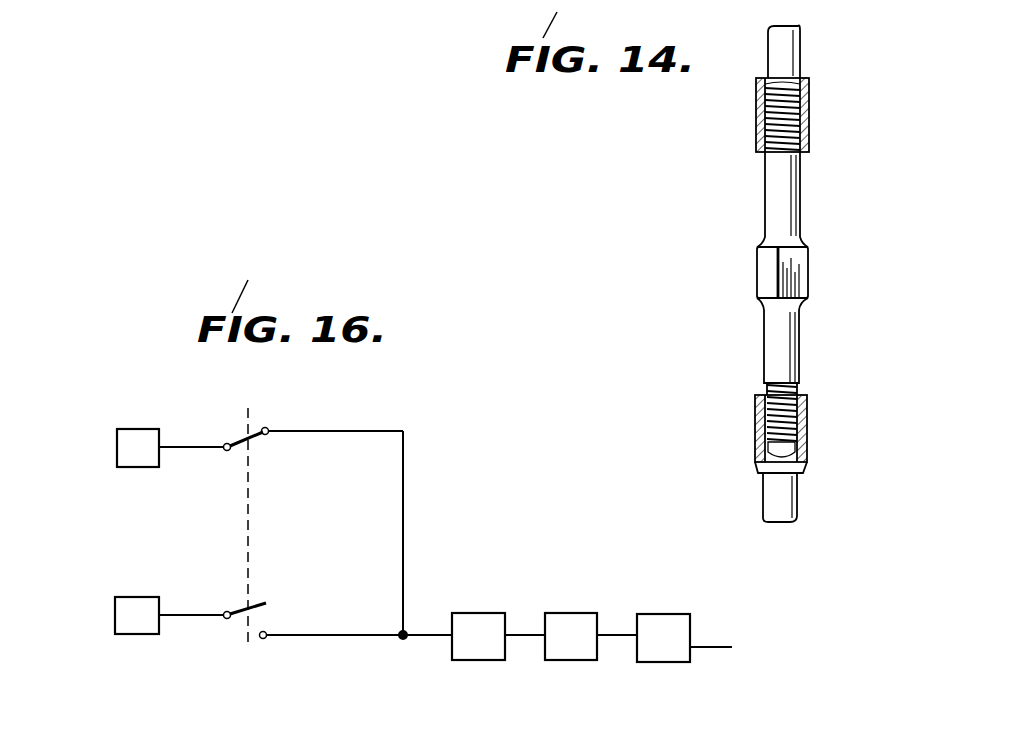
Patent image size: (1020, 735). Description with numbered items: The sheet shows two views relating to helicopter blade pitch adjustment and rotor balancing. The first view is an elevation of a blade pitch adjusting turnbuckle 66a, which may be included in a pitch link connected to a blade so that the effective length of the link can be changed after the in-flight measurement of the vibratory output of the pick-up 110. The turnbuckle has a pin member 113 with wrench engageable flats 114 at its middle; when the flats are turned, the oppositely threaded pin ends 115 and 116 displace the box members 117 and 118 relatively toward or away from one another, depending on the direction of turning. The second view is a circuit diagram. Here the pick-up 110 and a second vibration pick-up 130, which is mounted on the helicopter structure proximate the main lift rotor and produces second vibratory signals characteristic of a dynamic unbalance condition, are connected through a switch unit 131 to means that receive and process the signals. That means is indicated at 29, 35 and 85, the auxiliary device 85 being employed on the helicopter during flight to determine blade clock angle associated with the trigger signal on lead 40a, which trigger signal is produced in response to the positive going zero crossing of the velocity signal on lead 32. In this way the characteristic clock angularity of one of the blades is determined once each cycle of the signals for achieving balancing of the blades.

In FIG. 14, the turnbuckle 66a is at (742, 217).
In FIG. 14, the box member 117 is at (810, 108).
In FIG. 14, the threaded pin end 115 is at (806, 131).
In FIG. 14, the wrench engageable flats 114 is at (805, 284).
In FIG. 14, the pin member 113 is at (750, 323).
In FIG. 14, the threaded pin end 116 is at (801, 413).
In FIG. 14, the box member 118 is at (763, 435).
In FIG. 16, the vibration pick-up 110 is at (133, 429).
In FIG. 16, the second vibration pick-up 130 is at (130, 597).
In FIG. 16, the switch unit 131 is at (224, 639).
In FIG. 16, the signal processing means 29 is at (465, 662).
In FIG. 16, the velocity signal lead 32 is at (525, 636).
In FIG. 16, the signal processing means 35 is at (562, 662).
In FIG. 16, the trigger signal lead 40a is at (617, 636).
In FIG. 16, the auxiliary device 85 is at (725, 649).